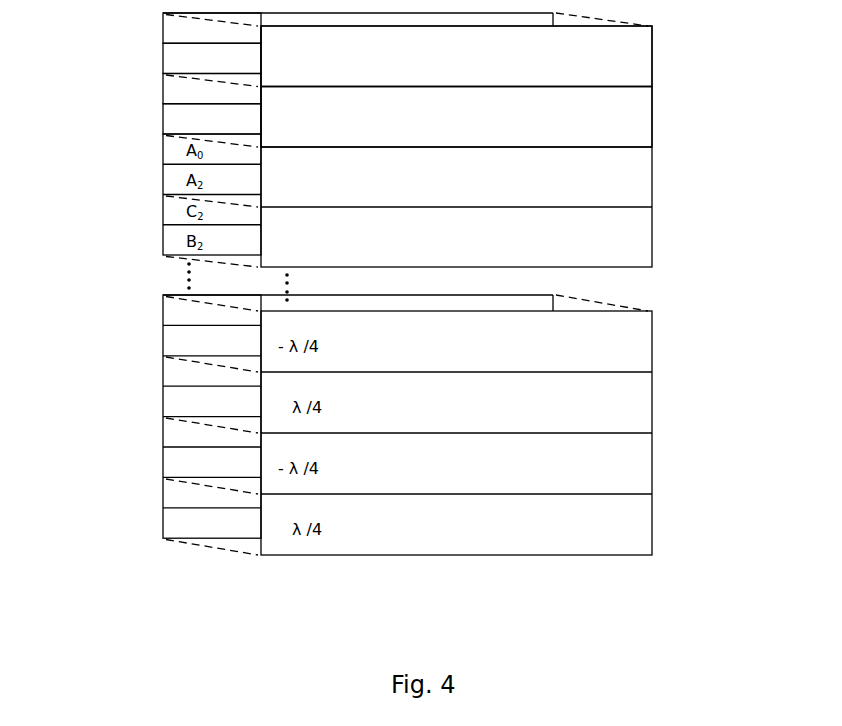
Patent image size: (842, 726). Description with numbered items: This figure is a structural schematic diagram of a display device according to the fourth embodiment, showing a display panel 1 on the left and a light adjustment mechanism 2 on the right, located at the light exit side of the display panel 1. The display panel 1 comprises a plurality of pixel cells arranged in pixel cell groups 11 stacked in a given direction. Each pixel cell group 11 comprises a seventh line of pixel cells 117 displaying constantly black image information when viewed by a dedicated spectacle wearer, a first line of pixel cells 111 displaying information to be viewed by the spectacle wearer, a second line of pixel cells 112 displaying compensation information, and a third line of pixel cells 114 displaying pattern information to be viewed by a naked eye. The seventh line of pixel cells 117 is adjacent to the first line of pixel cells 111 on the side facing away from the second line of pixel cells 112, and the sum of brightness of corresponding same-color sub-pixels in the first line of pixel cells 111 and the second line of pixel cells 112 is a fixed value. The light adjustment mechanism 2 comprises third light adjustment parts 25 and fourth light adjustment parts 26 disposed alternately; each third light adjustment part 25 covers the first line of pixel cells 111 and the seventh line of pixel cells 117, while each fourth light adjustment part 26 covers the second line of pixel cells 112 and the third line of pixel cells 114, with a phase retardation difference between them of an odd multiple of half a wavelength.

The display panel 1 is at (160, 444).
The light adjustment mechanism 2 is at (460, 140).
The pixel cell group 11 is at (151, 74).
The third light adjustment part 25 is at (637, 60).
The fourth light adjustment part 26 is at (640, 113).
The first line of pixel cells 111 is at (165, 62).
The second line of pixel cells 112 is at (165, 90).
The third line of pixel cells 114 is at (174, 120).
The seventh line of pixel cells 117 is at (165, 27).